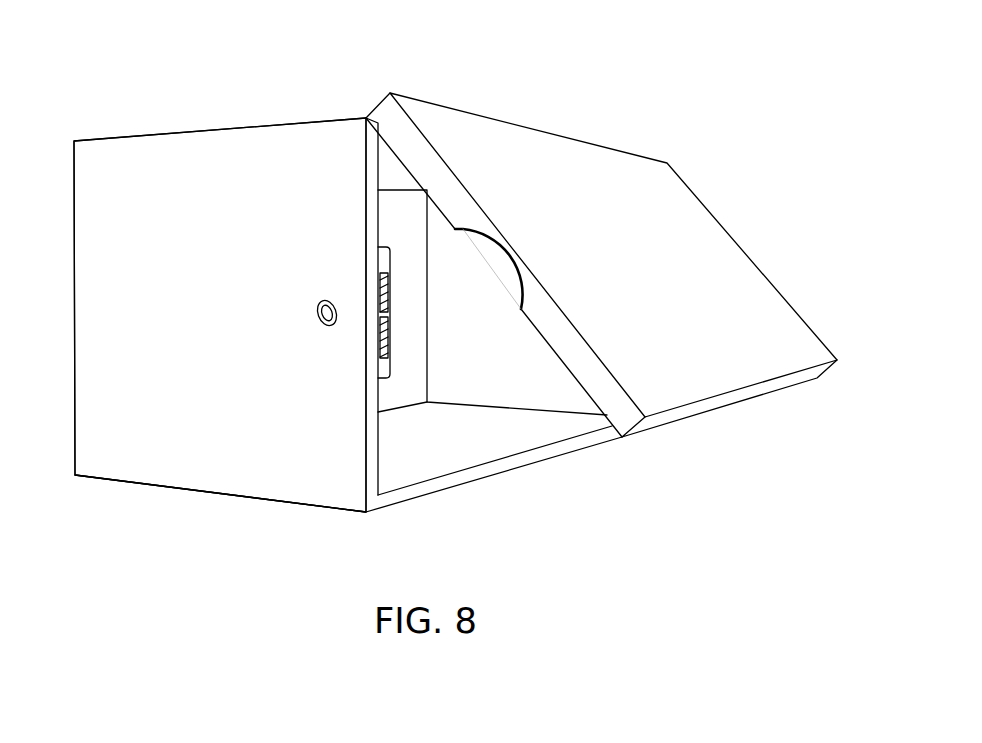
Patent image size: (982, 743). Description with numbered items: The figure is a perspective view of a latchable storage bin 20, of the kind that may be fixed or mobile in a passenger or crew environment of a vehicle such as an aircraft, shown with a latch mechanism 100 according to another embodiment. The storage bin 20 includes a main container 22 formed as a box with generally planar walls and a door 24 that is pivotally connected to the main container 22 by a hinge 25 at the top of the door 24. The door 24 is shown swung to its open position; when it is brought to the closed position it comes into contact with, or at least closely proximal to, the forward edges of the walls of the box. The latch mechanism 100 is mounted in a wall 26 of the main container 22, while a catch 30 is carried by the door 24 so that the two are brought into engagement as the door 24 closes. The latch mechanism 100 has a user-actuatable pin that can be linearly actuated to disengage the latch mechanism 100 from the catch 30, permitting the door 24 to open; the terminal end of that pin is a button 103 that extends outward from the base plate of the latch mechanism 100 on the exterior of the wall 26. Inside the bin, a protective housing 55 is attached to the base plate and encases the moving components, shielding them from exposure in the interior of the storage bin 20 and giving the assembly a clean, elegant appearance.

The storage bin 20 is at (163, 93).
The main container 22 is at (100, 480).
The door 24 is at (757, 264).
The hinge 25 is at (368, 116).
The wall 26 is at (296, 485).
The catch 30 is at (498, 267).
The protective housing 55 is at (383, 370).
The latch mechanism 100 is at (389, 389).
The button 103 is at (322, 328).